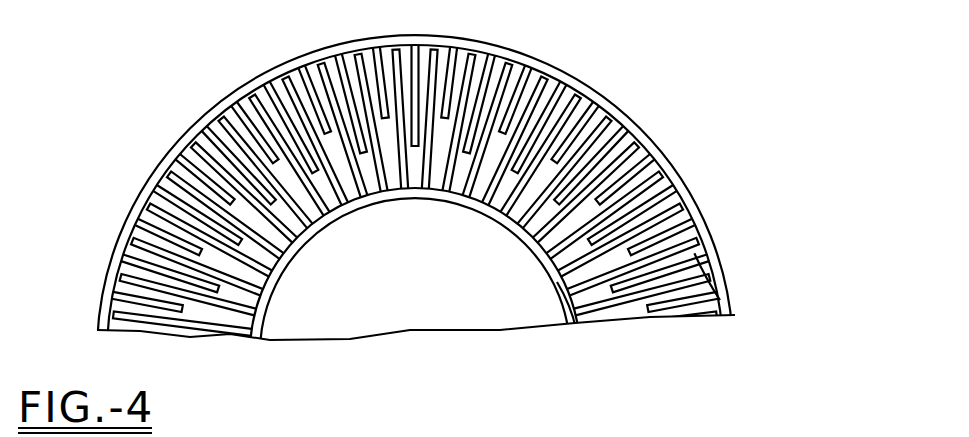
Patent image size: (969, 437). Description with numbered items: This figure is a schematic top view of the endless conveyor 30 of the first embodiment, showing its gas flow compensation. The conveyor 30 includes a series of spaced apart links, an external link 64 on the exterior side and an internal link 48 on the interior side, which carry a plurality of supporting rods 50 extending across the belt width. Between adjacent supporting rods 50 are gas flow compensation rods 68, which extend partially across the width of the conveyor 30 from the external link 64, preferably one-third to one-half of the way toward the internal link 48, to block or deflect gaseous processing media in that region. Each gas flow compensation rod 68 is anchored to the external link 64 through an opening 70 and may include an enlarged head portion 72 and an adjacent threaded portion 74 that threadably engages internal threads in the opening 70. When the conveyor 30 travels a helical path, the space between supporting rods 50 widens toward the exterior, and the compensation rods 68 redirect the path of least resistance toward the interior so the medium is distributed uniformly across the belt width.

The endless conveyor 30 is at (617, 78).
The internal link 48 is at (415, 270).
The supporting rods 50 is at (415, 178).
The external link 64 is at (225, 102).
The gas flow compensation rods 68 is at (415, 192).
The opening 70 is at (400, 118).
The enlarged head portion 72 is at (568, 317).
The threaded portion 74 is at (707, 276).